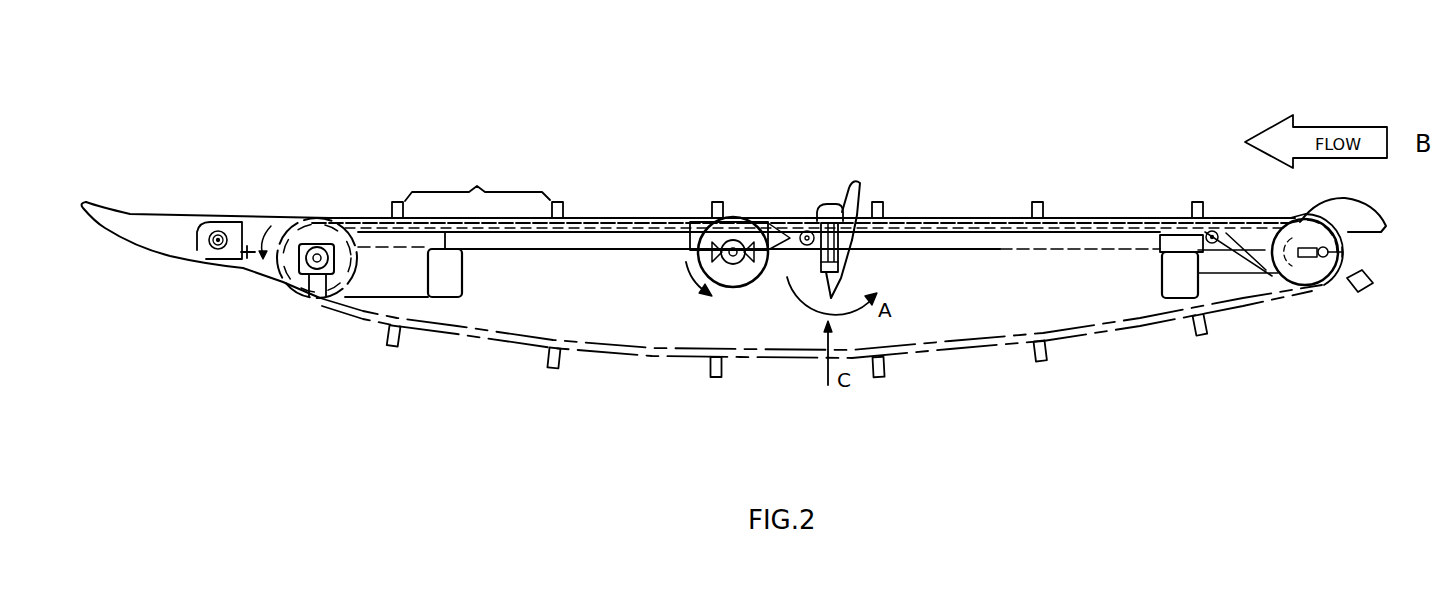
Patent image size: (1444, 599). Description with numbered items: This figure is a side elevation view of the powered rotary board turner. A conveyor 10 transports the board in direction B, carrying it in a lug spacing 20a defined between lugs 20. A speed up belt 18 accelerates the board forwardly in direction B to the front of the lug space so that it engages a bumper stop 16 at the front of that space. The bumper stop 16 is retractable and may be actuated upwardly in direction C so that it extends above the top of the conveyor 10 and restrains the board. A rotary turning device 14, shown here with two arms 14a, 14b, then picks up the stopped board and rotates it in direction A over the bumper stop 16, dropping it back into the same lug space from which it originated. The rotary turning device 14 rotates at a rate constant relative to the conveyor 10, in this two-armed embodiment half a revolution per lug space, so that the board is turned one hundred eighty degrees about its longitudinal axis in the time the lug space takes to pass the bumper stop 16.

The conveyor 10 is at (1040, 201).
The rotary turning device 14 is at (861, 178).
The arm 14a is at (849, 186).
The arm 14b is at (840, 278).
The bumper stop 16 is at (827, 212).
The speed up belt 18 is at (732, 212).
The lugs 20 is at (552, 198).
The lug spacing 20a is at (477, 186).